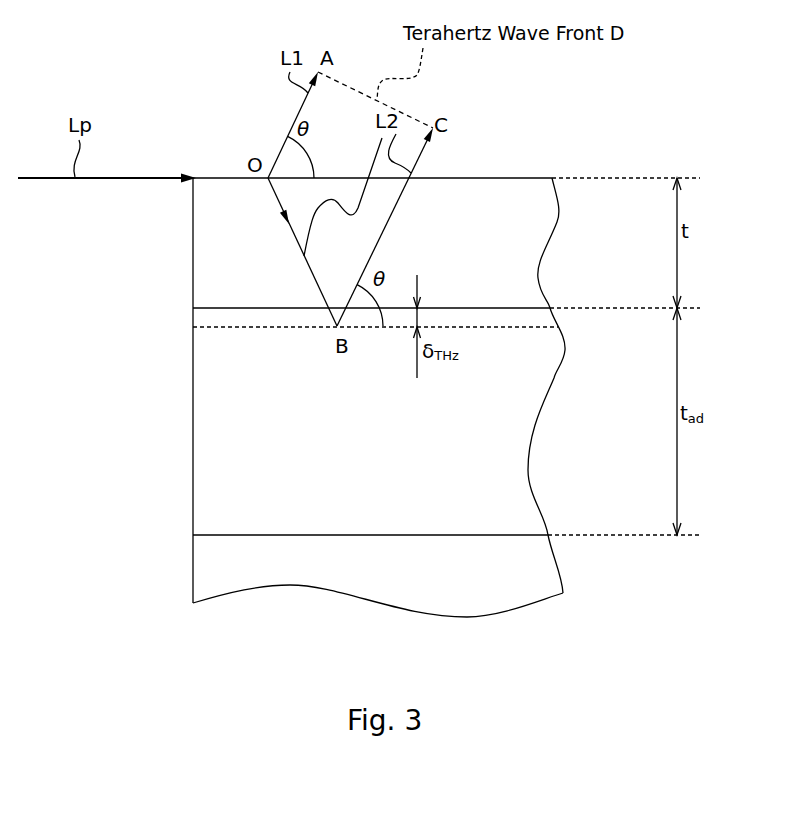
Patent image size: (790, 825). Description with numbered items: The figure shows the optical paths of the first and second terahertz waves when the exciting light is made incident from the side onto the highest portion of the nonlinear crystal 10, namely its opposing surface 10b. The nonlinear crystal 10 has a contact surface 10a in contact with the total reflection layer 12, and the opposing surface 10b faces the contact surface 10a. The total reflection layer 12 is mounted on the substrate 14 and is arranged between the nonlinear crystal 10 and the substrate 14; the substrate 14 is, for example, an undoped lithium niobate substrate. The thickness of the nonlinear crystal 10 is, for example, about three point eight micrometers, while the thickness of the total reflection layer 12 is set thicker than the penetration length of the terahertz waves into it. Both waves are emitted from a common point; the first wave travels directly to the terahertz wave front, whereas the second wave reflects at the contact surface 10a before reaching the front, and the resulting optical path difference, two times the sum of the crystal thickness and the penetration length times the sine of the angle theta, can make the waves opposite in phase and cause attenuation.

The nonlinear crystal 10 is at (558, 219).
The contact surface 10a is at (495, 308).
The opposing surface 10b is at (505, 178).
The total reflection layer 12 is at (565, 356).
The substrate 14 is at (558, 557).